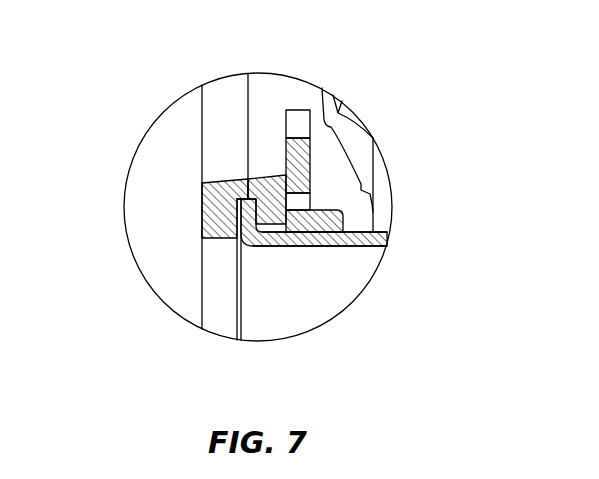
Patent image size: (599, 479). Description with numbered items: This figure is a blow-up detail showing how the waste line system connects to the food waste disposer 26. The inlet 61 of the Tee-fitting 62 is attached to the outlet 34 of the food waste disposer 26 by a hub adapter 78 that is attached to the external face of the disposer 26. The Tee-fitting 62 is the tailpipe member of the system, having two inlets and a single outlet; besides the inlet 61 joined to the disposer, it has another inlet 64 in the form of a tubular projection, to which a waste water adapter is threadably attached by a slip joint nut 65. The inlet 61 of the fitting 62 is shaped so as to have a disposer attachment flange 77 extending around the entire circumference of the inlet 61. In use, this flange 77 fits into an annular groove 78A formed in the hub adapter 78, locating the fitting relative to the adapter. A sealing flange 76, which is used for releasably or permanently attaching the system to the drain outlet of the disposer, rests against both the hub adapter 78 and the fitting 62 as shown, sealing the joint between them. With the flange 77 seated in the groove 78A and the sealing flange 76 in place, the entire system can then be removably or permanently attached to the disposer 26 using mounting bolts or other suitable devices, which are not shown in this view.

The food waste disposer 26 is at (184, 112).
The outlet 34 is at (217, 322).
The inlet 61 is at (245, 245).
The Tee-fitting 62 is at (386, 240).
The inlet 64 is at (382, 183).
The slip joint nut 65 is at (345, 120).
The sealing flange 76 is at (297, 110).
The disposer attachment flange 77 is at (238, 218).
The hub adapter 78 is at (210, 200).
The annular groove 78A is at (248, 76).